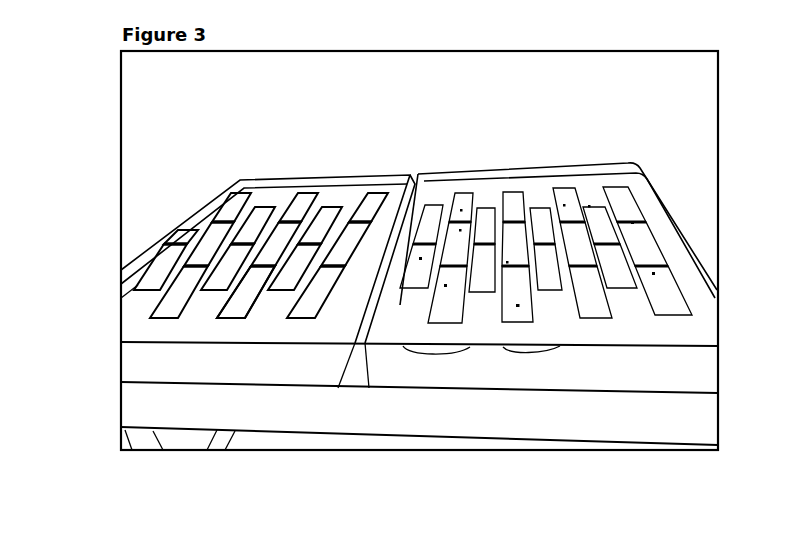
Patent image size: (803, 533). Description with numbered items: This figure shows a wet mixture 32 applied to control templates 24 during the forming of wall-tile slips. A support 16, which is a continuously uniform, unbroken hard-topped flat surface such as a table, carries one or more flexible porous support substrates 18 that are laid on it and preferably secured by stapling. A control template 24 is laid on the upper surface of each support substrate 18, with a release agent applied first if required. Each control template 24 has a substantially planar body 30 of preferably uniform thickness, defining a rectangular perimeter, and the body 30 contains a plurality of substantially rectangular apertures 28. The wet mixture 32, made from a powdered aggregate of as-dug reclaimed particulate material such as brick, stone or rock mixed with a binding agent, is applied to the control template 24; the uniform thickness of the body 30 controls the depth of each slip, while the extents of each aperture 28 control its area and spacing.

The support 16 is at (158, 412).
The flexible porous support substrate 18 is at (196, 363).
The control template 24 is at (419, 269).
The aperture 28 is at (303, 328).
The body 30 is at (272, 328).
The wet mixture 32 is at (552, 280).